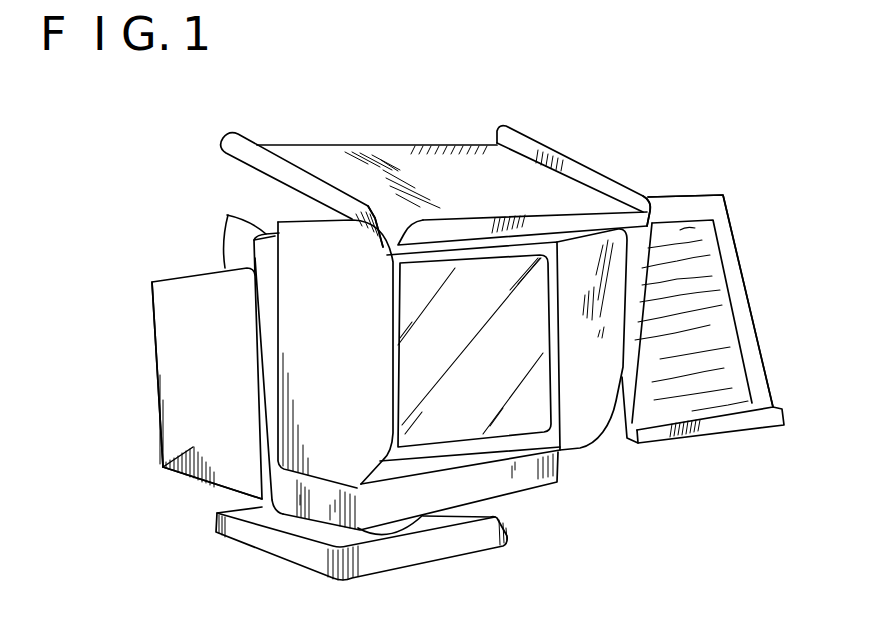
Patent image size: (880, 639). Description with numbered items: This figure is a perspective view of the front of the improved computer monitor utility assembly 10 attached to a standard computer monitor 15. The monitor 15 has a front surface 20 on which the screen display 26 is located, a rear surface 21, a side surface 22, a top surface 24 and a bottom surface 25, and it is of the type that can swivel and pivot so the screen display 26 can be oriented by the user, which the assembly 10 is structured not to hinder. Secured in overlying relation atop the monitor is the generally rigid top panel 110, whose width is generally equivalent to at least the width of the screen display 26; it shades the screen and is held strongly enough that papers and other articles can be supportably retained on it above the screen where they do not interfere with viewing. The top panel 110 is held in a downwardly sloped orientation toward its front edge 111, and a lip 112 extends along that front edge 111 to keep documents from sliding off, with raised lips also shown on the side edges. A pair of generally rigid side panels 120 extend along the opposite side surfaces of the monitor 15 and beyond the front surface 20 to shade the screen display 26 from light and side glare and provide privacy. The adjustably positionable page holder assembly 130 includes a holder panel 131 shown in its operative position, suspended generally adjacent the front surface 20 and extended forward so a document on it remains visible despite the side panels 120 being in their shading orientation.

The computer monitor utility assembly 10 is at (152, 148).
The computer monitor 15 is at (163, 467).
The front surface 20 is at (554, 440).
The rear surface 21 is at (154, 350).
The side surface 22 is at (228, 362).
The top surface 24 is at (227, 215).
The bottom surface 25 is at (205, 487).
The screen display 26 is at (498, 382).
The top panel 110 is at (483, 196).
The front edge 111 is at (398, 245).
The lip 112 is at (587, 212).
The side panels 120 is at (352, 311).
The page holder assembly 130 is at (742, 216).
The holder panel 131 is at (695, 207).